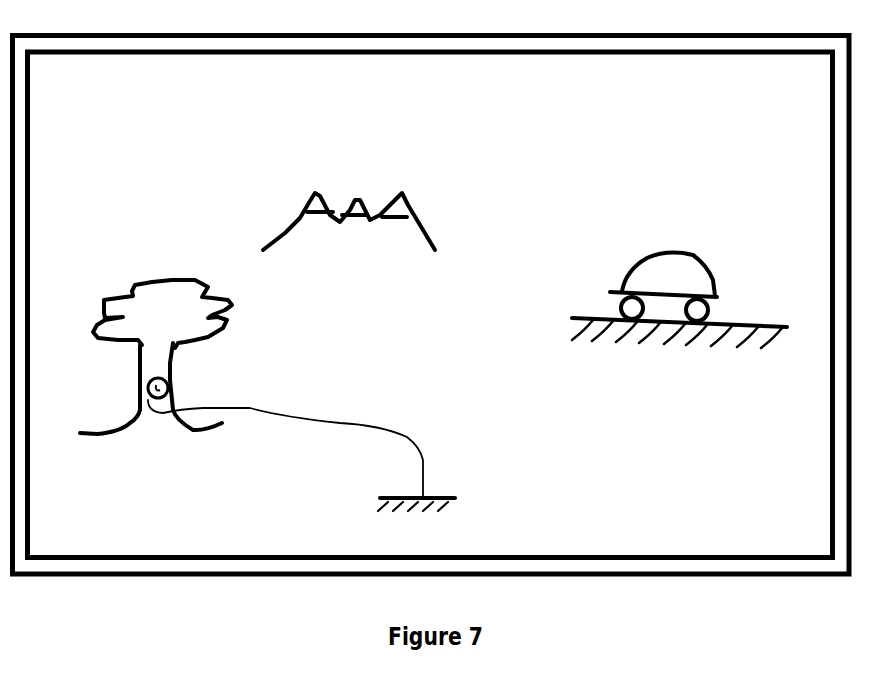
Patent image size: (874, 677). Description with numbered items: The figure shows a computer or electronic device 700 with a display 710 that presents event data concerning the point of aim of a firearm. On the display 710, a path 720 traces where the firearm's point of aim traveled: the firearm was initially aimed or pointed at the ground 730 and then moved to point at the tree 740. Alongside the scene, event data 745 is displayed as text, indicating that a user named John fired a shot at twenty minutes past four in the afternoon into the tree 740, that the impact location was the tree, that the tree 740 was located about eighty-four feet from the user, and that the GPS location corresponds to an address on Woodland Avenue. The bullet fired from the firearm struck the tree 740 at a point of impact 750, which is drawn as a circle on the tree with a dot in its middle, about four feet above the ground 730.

The electronic device 700 is at (848, 102).
The display 710 is at (799, 90).
The path 720 is at (345, 396).
The ground 730 is at (378, 500).
The tree 740 is at (163, 283).
The event data 745 is at (490, 329).
The point of impact 750 is at (147, 384).